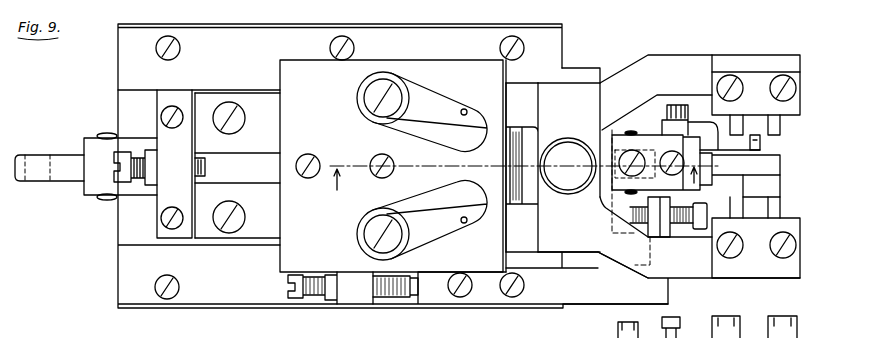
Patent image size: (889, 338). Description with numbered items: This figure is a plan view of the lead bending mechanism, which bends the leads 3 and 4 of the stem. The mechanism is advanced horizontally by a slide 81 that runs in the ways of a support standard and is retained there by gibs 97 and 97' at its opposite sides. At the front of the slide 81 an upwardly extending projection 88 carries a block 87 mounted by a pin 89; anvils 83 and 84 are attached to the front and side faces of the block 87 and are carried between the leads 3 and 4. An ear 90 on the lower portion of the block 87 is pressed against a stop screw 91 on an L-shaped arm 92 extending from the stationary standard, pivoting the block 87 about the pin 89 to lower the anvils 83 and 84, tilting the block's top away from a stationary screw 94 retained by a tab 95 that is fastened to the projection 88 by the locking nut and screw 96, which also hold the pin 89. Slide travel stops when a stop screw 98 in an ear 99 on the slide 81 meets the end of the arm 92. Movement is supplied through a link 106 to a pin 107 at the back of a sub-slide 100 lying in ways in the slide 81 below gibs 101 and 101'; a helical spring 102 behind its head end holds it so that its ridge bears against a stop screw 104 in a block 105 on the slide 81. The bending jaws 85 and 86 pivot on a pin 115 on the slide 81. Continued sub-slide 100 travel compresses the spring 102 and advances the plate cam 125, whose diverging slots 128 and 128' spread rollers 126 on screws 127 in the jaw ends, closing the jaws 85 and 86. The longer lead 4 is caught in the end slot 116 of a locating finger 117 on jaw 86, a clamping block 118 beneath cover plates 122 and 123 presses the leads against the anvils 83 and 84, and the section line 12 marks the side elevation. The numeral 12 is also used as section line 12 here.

The lead 3 is at (770, 192).
The lead 4 is at (762, 152).
The section line 12 is at (522, 187).
The slide 81 is at (157, 90).
The anvil 83 is at (768, 185).
The anvil 84 is at (780, 162).
The bending jaw 85 is at (700, 277).
The bending jaw 86 is at (686, 56).
The block 87 is at (706, 215).
The projection 88 is at (607, 135).
The pin 89 is at (632, 134).
The ear 90 is at (618, 206).
The stop screw 91 is at (688, 238).
The L-shaped arm 92 is at (608, 300).
The stationary screw 94 is at (685, 325).
The tab 95 is at (581, 331).
The locking nut and screw 96 is at (636, 325).
The gib 97 is at (459, 213).
The gib 97' is at (340, 46).
The stop screw 98 is at (403, 298).
The ear 99 is at (368, 298).
The sub-slide 100 is at (137, 138).
The gib 101 is at (237, 227).
The gib 101' is at (237, 104).
The helical spring 102 is at (510, 172).
The stop screw 104 is at (206, 170).
The block 105 is at (160, 208).
The link 106 is at (58, 180).
The pin 107 is at (107, 134).
The pin 115 is at (568, 138).
The end slot 116 is at (755, 145).
The locating finger 117 is at (768, 148).
The clamping block 118 is at (757, 200).
The cover plate 122 is at (750, 278).
The cover plate 123 is at (757, 62).
The plate cam 125 is at (355, 58).
The roller 126 is at (408, 85).
The screw 127 is at (386, 84).
The diverging slot 128 is at (483, 230).
The diverging slot 128' is at (478, 94).